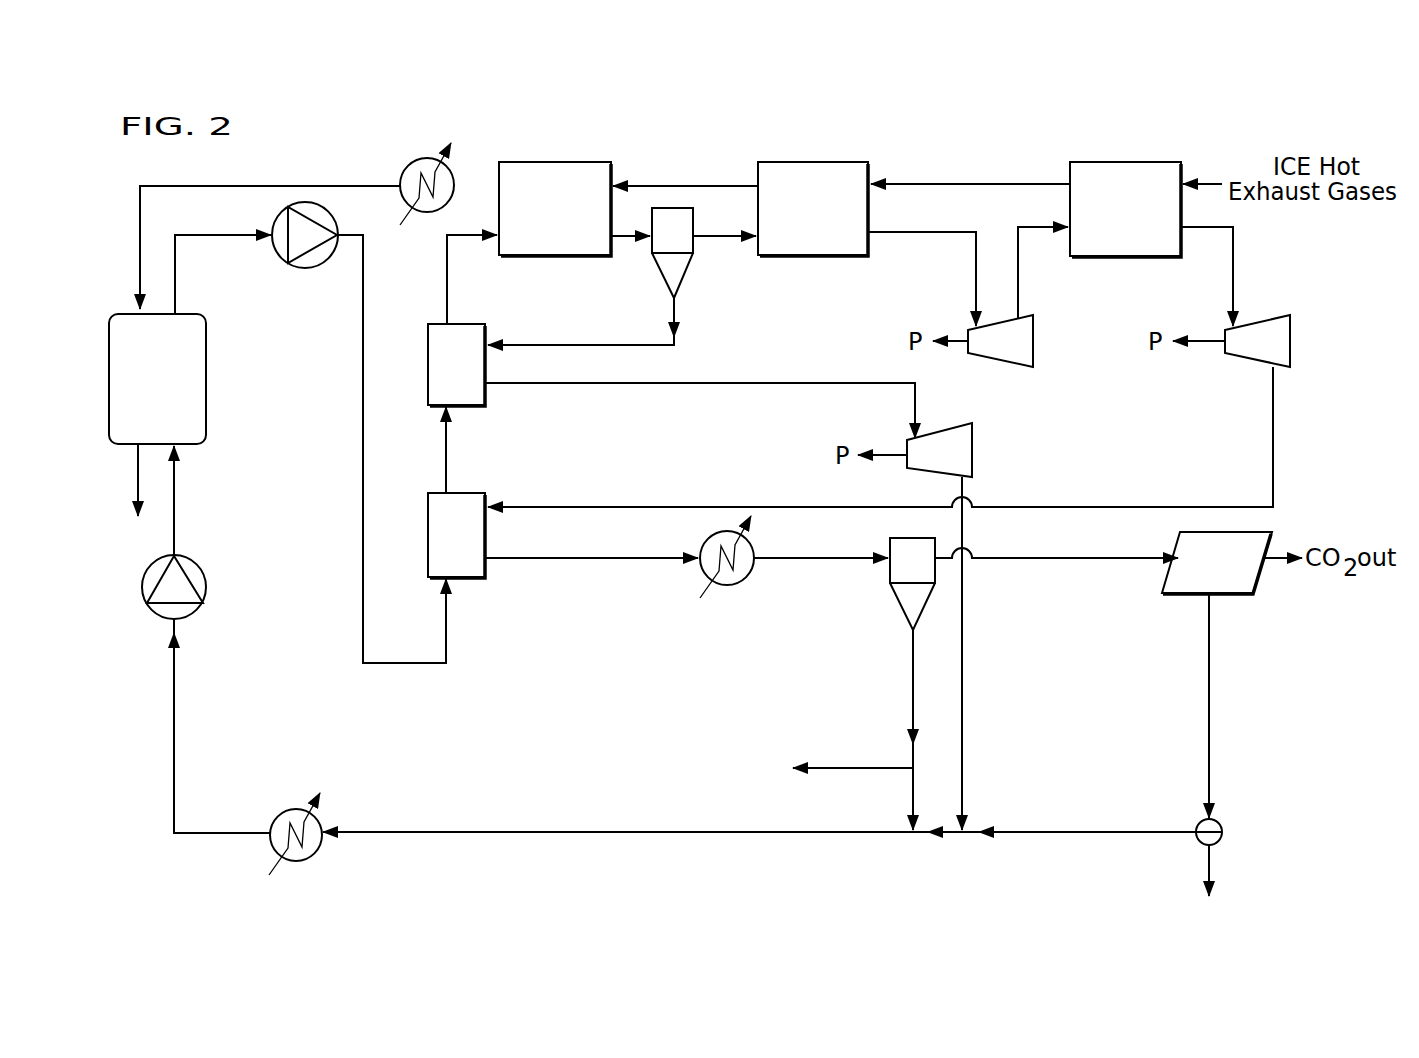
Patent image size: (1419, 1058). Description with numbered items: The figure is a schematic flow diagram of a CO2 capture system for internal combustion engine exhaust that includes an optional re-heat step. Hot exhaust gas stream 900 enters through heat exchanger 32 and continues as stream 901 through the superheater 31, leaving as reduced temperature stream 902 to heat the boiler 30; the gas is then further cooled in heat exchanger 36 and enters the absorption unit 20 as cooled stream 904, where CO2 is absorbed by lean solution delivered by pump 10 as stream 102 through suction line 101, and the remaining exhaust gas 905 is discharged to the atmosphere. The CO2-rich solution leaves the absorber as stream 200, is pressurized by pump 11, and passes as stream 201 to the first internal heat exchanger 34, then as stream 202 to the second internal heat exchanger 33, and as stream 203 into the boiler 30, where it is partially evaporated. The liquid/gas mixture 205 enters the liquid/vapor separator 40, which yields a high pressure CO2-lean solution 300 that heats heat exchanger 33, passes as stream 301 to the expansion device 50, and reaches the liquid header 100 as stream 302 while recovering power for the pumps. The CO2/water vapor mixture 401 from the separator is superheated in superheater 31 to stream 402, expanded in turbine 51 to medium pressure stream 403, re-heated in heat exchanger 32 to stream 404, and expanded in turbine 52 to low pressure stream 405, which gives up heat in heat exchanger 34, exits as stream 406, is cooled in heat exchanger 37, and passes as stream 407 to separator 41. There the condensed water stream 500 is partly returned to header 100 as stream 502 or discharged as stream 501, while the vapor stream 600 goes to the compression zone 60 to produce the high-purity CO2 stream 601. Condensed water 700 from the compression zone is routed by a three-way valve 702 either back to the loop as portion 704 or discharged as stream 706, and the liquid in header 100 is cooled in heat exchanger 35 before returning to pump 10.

The pump 10 is at (143, 585).
The pump 11 is at (278, 216).
The absorption unit 20 is at (206, 381).
The boiler 30 is at (550, 162).
The superheater 31 is at (815, 162).
The heat exchanger 32 is at (1132, 162).
The second internal heat exchanger 33 is at (428, 368).
The first internal heat exchanger 34 is at (428, 528).
The heat exchanger 35 is at (278, 813).
The heat exchanger 36 is at (410, 161).
The heat exchanger 37 is at (713, 536).
The liquid/vapor separator 40 is at (683, 276).
The separator 41 is at (893, 596).
The expansion device 50 is at (972, 456).
The turbine 51 is at (1033, 338).
The turbine 52 is at (1290, 338).
The compression zone 60 is at (1233, 594).
The liquid header 100 is at (537, 832).
The suction line 101 is at (174, 739).
The lean solution stream 102 is at (174, 496).
The CO2-rich solution stream 200 is at (177, 283).
The pressurized CO2-rich solution stream 201 is at (446, 616).
The pressurized CO2-rich solution stream 202 is at (446, 431).
The high pressure CO2-rich solution stream 203 is at (447, 283).
The high pressure CO2-rich liquid/gas mixture 205 is at (620, 240).
The high pressure CO2-lean solution 300 is at (542, 327).
The CO2-lean solution stream 301 is at (784, 384).
The expanded CO2-lean solution stream 302 is at (962, 695).
The CO2/water vapor mixture 401 is at (715, 240).
The superheated stream 402 is at (976, 266).
The medium pressure CO2/water stream 403 is at (1018, 280).
The heated stream 404 is at (1233, 272).
The expanded low pressure stream 405 is at (1274, 431).
The low pressure CO2/water stream 406 is at (637, 560).
The cooled low pressure CO2/water stream 407 is at (792, 562).
The condensed water stream 500 is at (913, 640).
The excess water stream 501 is at (835, 768).
The water return stream 502 is at (913, 797).
The vapor stream 600 is at (1068, 558).
The high-purity CO2 stream 601 is at (1272, 561).
The condensed water stream 700 is at (1209, 656).
The three-way valve 702 is at (1222, 822).
The returned water portion 704 is at (1065, 832).
The water discharge 706 is at (1212, 866).
The hot exhaust gas stream 900 is at (1222, 180).
The hot exhaust gas stream 901 is at (920, 180).
The reduced temperature exhaust gas stream 902 is at (660, 182).
The cooled exhaust gas stream 904 is at (323, 186).
The remaining exhaust gas 905 is at (138, 484).